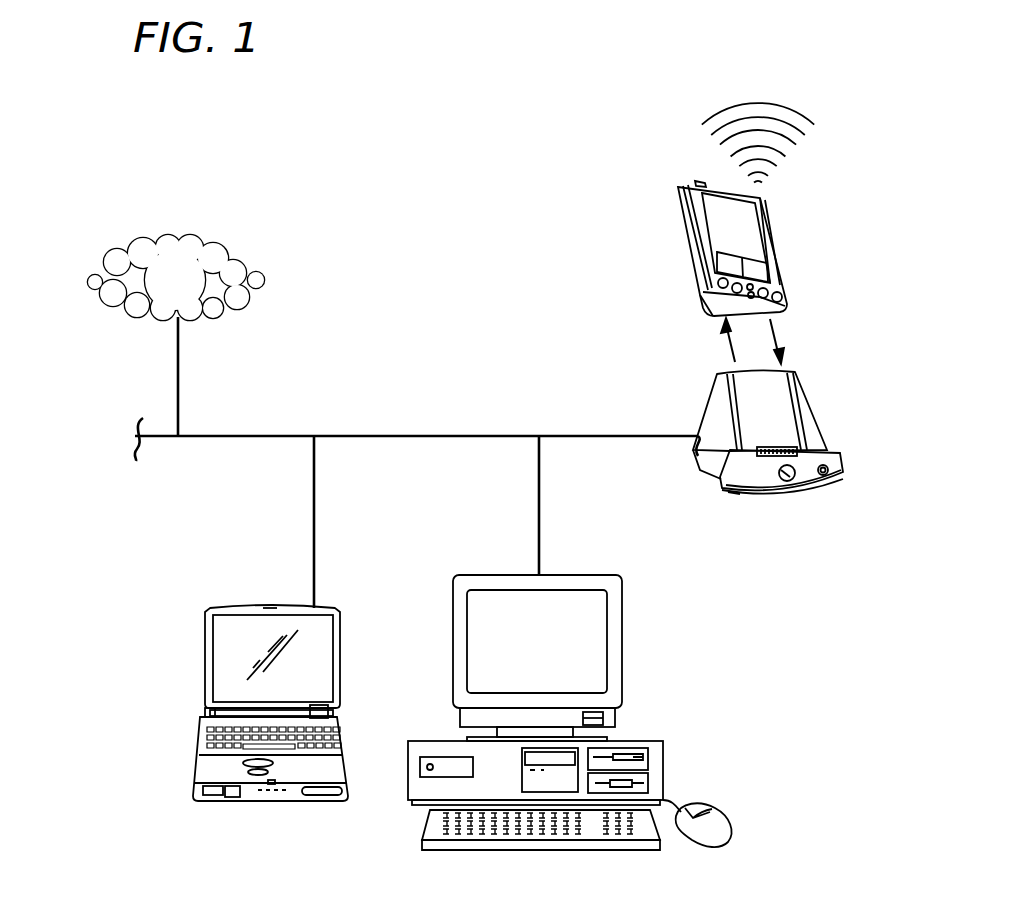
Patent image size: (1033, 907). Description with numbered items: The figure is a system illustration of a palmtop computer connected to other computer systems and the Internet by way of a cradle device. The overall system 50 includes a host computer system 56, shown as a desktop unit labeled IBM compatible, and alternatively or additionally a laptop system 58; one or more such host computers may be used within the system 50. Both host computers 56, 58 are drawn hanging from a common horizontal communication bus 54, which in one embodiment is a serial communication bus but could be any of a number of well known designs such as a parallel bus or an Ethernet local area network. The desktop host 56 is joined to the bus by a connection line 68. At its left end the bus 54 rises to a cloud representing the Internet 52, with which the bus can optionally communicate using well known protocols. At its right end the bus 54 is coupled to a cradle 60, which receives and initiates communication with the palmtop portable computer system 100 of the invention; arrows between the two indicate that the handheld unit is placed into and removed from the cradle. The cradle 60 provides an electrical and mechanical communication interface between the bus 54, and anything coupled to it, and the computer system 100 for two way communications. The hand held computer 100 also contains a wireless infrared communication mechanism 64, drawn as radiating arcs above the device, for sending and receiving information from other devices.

The system 50 is at (289, 113).
The Internet 52 is at (87, 280).
The communication bus 54 is at (366, 434).
The host computer system 56 is at (570, 661).
The laptop system 58 is at (207, 647).
The cradle 60 is at (788, 491).
The wireless infrared communication mechanism 64 is at (727, 146).
The connection line to personal computer 68 is at (541, 500).
The palmtop portable computer system 100 is at (695, 210).